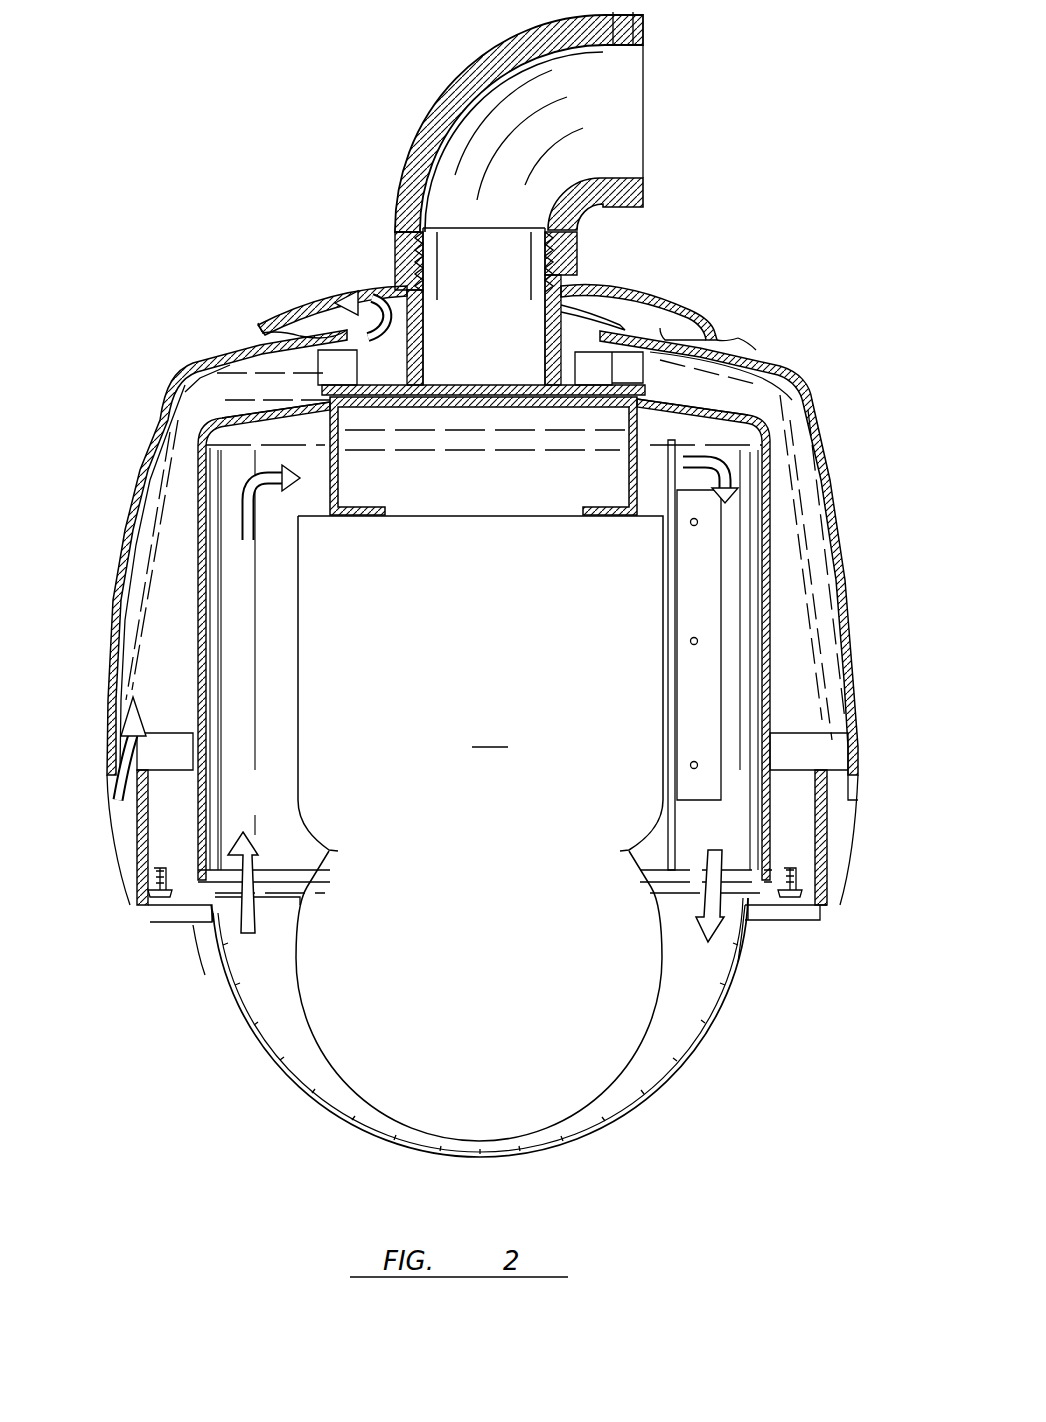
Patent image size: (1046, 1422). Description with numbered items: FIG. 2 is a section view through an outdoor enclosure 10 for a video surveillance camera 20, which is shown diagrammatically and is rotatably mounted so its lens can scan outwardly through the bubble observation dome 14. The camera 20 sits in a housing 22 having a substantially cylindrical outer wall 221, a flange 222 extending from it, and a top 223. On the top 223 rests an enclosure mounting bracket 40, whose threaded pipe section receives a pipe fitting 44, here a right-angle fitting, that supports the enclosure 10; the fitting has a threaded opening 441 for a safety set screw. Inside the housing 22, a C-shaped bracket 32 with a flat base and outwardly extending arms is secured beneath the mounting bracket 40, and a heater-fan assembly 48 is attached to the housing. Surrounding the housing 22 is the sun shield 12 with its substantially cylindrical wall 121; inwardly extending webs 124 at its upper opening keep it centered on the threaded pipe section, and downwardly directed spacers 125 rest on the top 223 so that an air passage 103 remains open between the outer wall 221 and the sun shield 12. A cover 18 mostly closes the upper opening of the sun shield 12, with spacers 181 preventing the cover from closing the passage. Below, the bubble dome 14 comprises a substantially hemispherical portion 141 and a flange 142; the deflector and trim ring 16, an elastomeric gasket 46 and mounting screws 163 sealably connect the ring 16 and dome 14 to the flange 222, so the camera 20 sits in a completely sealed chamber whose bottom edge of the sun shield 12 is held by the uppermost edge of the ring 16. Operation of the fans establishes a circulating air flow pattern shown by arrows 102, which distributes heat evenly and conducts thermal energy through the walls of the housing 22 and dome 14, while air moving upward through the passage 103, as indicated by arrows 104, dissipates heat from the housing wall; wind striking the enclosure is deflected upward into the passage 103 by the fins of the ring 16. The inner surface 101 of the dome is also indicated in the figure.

The outdoor enclosure 10 is at (752, 343).
The sun shield 12 is at (140, 435).
The bubble observation dome 14 is at (738, 985).
The trim ring 16 is at (845, 862).
The cover 18 is at (648, 300).
The video surveillance camera 20 is at (480, 683).
The housing 22 is at (195, 540).
The C-shaped bracket 32 is at (612, 432).
The enclosure mounting bracket 40 is at (458, 222).
The pipe fitting 44 is at (440, 88).
The elastomeric gasket 46 is at (744, 915).
The heater-fan assembly 48 is at (738, 643).
The inner surface 101 is at (225, 643).
The arrows 102 is at (255, 522).
The air passage 103 is at (160, 605).
The arrows 104 is at (362, 298).
The cylindrical wall 121 is at (105, 720).
The webs 124 is at (600, 303).
The spacers 125 is at (748, 350).
The hemispherical portion 141 is at (262, 1032).
The flange 142 is at (207, 928).
The mounting screws 163 is at (160, 912).
The spacers 181 is at (738, 336).
The outer wall 221 is at (190, 590).
The flange 222 is at (150, 864).
The top 223 is at (240, 415).
The threaded opening 441 is at (395, 248).